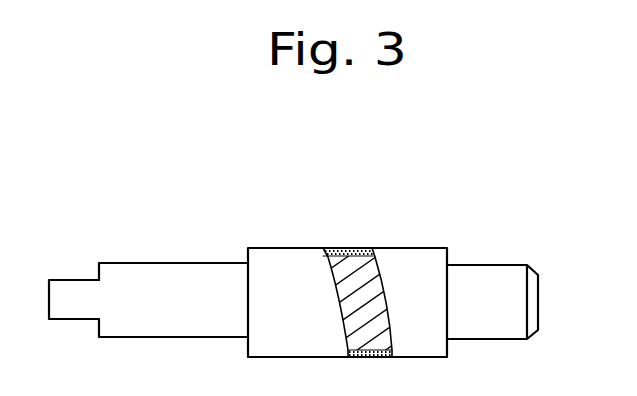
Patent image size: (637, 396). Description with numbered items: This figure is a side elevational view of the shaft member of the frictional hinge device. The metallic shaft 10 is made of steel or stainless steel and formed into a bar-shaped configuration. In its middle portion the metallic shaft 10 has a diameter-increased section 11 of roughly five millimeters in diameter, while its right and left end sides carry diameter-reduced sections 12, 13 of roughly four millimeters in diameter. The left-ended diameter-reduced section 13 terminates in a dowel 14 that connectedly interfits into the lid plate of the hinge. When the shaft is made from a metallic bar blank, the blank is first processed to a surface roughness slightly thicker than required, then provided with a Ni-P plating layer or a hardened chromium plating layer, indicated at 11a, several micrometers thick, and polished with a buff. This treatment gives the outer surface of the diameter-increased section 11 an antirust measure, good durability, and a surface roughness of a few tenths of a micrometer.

The metallic shaft 10 is at (263, 223).
The diameter-increased section 11 is at (383, 262).
The plating layer 11a is at (350, 257).
The diameter-reduced section 12 is at (488, 278).
The diameter-reduced section 13 is at (153, 272).
The dowel 14 is at (73, 288).